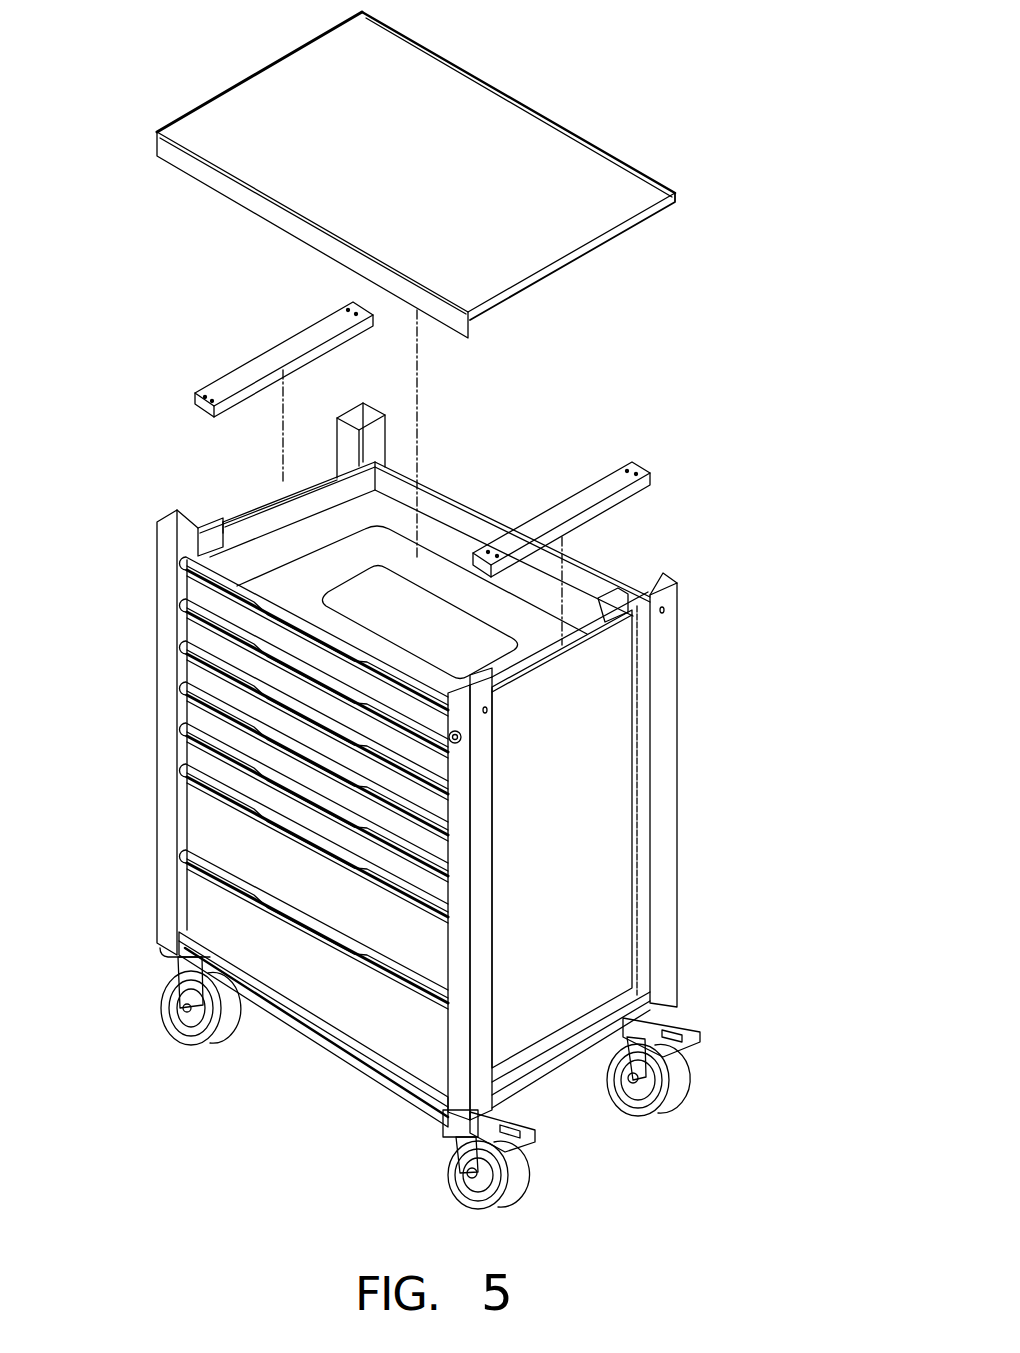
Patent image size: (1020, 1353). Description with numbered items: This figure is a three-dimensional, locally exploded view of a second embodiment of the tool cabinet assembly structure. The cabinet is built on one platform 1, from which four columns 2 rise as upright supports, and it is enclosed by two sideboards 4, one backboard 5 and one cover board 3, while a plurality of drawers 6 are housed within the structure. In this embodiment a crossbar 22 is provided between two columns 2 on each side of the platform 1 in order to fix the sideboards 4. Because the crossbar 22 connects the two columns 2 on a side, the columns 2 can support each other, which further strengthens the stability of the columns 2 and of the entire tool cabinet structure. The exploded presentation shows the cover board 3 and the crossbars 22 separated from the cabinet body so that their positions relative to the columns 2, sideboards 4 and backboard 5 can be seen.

The platform 1 is at (555, 1060).
The columns 2 is at (155, 730).
The cover board 3 is at (512, 128).
The sideboards 4 is at (240, 515).
The backboard 5 is at (485, 500).
The drawers 6 is at (322, 980).
The crossbar 22 is at (280, 352).